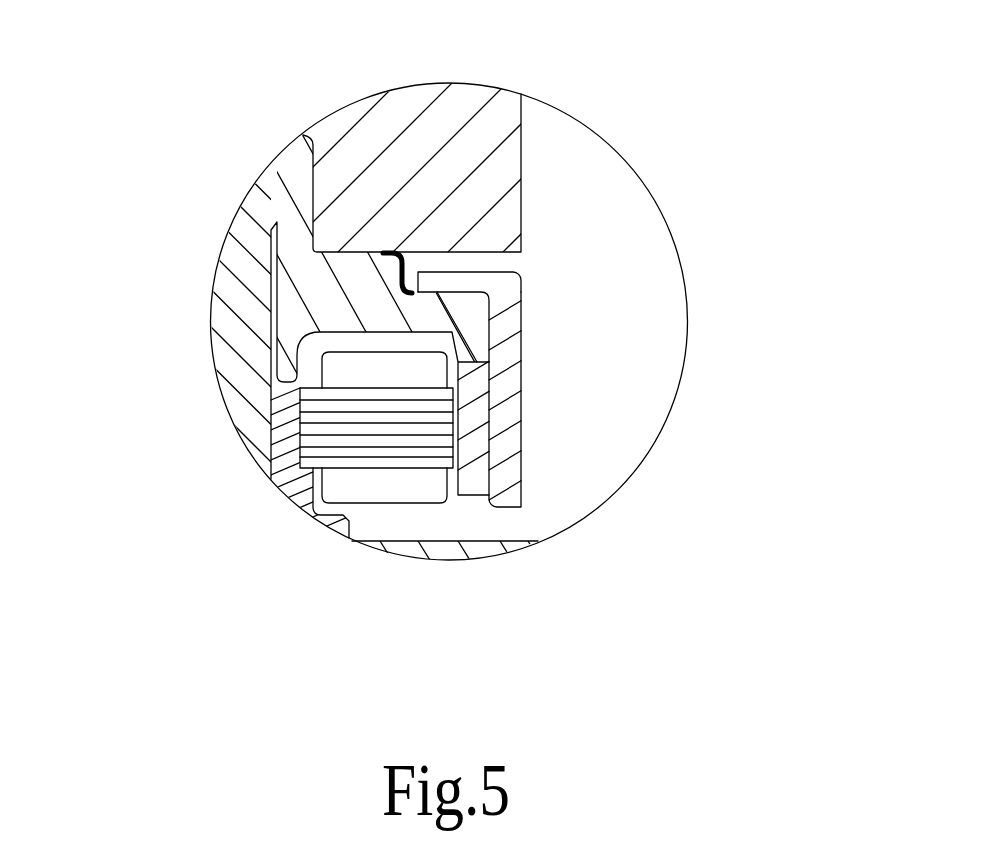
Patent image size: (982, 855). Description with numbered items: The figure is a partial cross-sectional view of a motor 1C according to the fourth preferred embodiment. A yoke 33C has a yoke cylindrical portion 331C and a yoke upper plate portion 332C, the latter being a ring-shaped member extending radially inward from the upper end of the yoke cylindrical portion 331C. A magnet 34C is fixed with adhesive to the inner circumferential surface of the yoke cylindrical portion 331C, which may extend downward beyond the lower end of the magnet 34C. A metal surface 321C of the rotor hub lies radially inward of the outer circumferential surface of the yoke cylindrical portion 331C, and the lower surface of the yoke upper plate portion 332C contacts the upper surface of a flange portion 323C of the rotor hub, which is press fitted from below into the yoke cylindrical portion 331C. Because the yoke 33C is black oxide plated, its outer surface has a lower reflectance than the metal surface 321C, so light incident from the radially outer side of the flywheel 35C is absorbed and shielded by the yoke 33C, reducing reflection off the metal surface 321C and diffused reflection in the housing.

The motor 1C is at (85, 29).
The flywheel 35C is at (455, 158).
The yoke 33C is at (660, 334).
The metal surface 321C is at (390, 271).
The flange portion 323C is at (440, 312).
The yoke upper plate portion 332C is at (452, 280).
The yoke cylindrical portion 331C is at (507, 338).
The magnet 34C is at (467, 410).